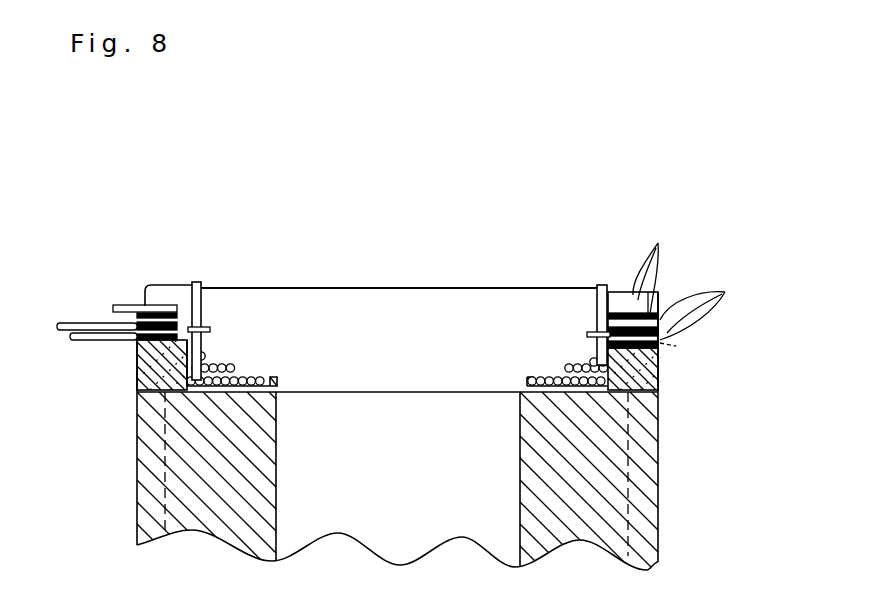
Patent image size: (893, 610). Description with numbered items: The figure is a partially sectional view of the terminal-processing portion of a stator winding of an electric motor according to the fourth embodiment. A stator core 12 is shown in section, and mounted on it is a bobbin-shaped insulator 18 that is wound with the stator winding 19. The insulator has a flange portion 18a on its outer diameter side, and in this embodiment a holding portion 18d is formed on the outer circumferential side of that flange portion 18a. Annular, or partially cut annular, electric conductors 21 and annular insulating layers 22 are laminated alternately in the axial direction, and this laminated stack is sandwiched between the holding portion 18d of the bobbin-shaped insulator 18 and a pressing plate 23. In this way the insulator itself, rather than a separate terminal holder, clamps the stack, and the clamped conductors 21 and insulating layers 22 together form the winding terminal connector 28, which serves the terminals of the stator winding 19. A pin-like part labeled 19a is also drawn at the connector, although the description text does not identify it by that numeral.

The stator core 12 is at (618, 490).
The bobbin-shaped insulator 18 is at (660, 380).
The flange portion 18a is at (187, 280).
The holding portion 18d is at (660, 350).
The stator winding 19 is at (658, 427).
The pin 19a is at (600, 287).
The electric conductor 21 is at (693, 315).
The insulating layer 22 is at (667, 261).
The pressing plate 23 is at (157, 290).
The winding terminal connector 28 is at (127, 277).